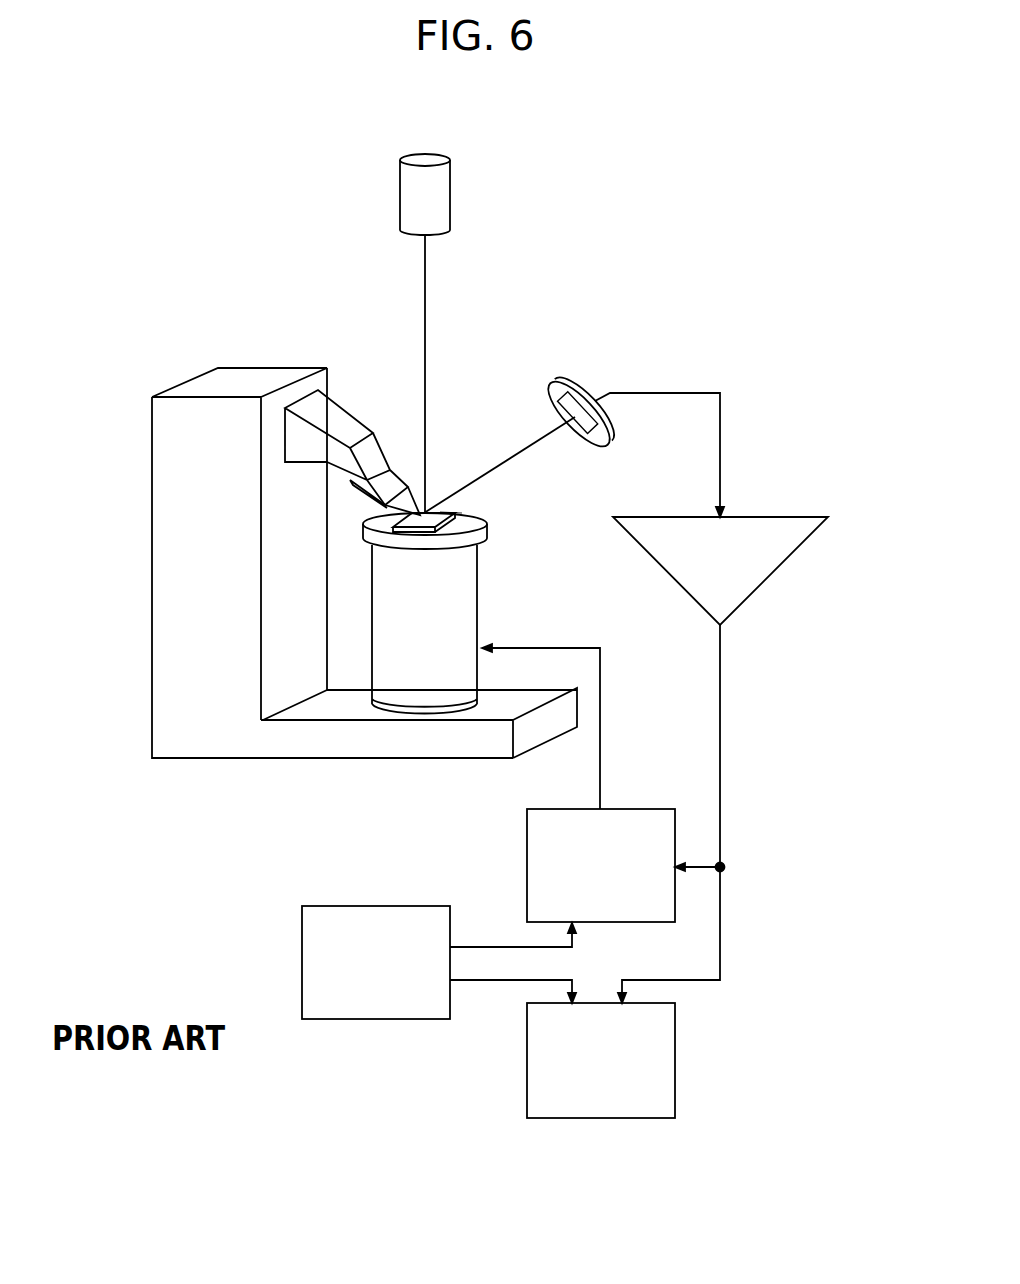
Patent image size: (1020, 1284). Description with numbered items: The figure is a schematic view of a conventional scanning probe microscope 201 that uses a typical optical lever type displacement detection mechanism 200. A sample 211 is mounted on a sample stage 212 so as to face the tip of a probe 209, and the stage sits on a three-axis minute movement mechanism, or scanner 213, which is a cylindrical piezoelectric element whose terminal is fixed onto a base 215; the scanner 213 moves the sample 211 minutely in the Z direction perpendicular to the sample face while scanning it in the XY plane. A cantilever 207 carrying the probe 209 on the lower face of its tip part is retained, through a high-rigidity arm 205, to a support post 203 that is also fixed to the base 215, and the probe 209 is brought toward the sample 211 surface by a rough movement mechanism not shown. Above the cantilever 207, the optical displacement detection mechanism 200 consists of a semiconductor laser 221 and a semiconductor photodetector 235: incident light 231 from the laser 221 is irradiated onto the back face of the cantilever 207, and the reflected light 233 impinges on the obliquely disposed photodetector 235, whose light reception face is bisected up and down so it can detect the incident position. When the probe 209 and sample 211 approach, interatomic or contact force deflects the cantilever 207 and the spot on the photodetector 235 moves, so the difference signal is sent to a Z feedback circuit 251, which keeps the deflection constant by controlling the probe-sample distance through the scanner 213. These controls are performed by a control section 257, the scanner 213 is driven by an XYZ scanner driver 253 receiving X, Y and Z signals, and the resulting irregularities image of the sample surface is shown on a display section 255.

The optical displacement detection mechanism 200 is at (580, 335).
The scanning probe microscope 201 is at (195, 235).
The support post 203 is at (245, 368).
The arm 205 is at (346, 420).
The cantilever 207 is at (424, 512).
The probe 209 is at (462, 513).
The sample 211 is at (426, 533).
The sample stage 212 is at (488, 530).
The three-axis minute movement mechanism (scanner) 213 is at (478, 630).
The base 215 is at (340, 748).
The semiconductor laser 221 is at (443, 193).
The incident light 231 is at (425, 305).
The reflected light 233 is at (540, 440).
The photodetector 235 is at (580, 387).
The Z feedback circuit 251 is at (772, 516).
The XYZ scanner driver 253 is at (645, 808).
The display section 255 is at (675, 1053).
The control section 257 is at (375, 906).